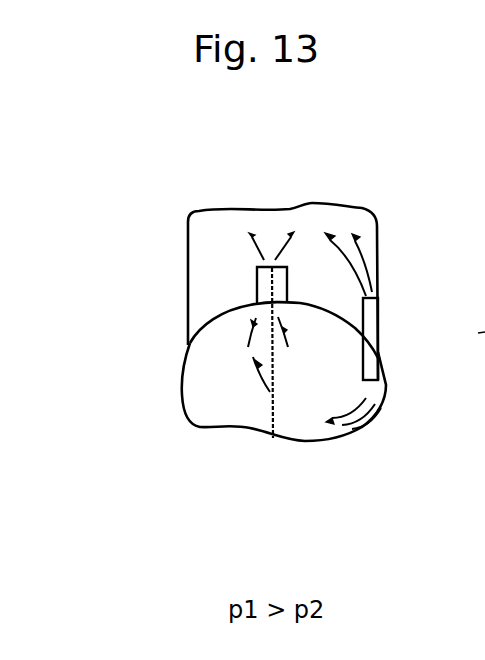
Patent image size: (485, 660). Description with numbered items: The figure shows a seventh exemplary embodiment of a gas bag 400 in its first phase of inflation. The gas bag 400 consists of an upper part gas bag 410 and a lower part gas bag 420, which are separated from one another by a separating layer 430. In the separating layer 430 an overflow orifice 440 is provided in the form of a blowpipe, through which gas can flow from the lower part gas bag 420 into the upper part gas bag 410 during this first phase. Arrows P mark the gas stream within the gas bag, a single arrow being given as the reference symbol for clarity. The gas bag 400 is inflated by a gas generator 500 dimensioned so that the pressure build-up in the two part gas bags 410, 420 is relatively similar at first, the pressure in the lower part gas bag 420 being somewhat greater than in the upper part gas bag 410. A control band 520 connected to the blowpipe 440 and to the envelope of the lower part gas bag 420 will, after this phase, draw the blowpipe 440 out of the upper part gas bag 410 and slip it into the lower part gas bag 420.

The gas bag 400 is at (187, 272).
The upper part gas bag 410 is at (192, 213).
The lower part gas bag 420 is at (213, 432).
The separating layer 430 is at (337, 314).
The overflow orifice 440 is at (255, 280).
The gas generator 500 is at (373, 322).
The control band 520 is at (273, 427).
The arrows marking the gas stream P is at (386, 402).